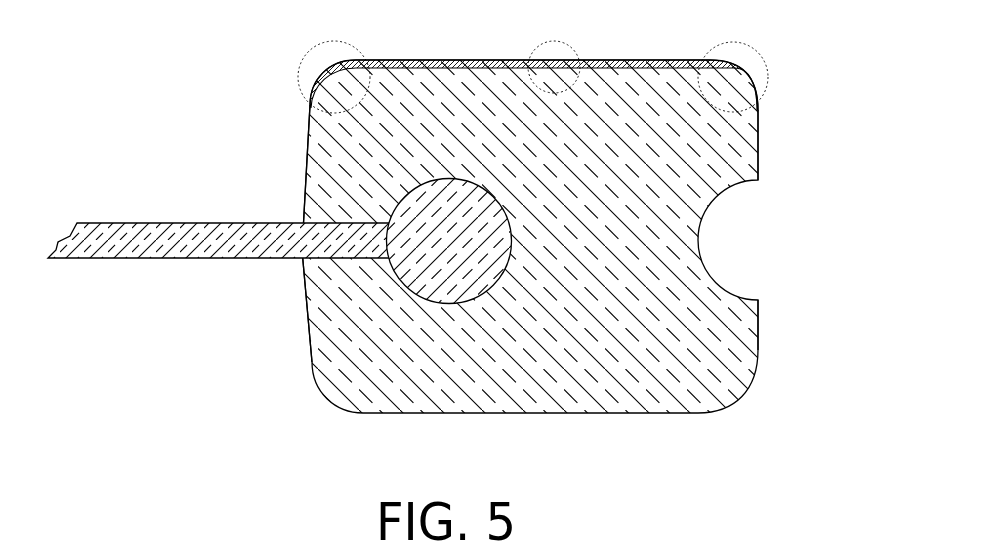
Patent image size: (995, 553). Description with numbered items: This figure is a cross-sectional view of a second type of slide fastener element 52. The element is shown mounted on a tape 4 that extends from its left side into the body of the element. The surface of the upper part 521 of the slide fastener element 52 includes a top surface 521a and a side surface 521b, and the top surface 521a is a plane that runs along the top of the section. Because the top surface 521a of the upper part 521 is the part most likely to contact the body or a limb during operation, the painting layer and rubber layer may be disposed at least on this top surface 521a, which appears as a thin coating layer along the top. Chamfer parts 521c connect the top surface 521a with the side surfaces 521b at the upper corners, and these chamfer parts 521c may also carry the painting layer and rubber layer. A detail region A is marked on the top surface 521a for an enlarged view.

The plate / sheet member 4 is at (140, 246).
The slide fastener element 52 is at (450, 217).
The upper part 521 is at (530, 206).
The top surface 521a is at (633, 60).
The side surface 521b is at (310, 165).
The chamfer part 521c is at (302, 63).
The detail region A is at (554, 51).